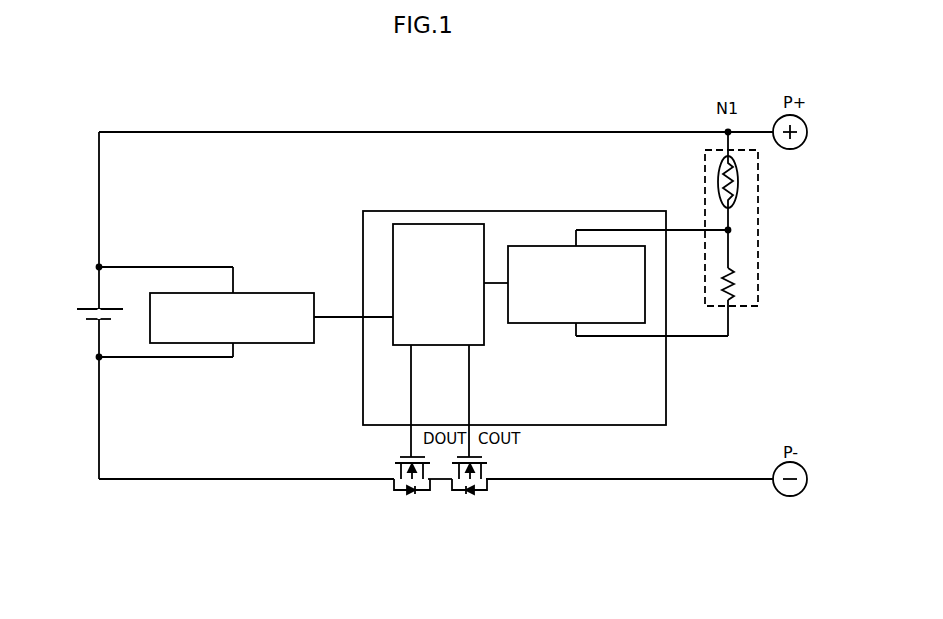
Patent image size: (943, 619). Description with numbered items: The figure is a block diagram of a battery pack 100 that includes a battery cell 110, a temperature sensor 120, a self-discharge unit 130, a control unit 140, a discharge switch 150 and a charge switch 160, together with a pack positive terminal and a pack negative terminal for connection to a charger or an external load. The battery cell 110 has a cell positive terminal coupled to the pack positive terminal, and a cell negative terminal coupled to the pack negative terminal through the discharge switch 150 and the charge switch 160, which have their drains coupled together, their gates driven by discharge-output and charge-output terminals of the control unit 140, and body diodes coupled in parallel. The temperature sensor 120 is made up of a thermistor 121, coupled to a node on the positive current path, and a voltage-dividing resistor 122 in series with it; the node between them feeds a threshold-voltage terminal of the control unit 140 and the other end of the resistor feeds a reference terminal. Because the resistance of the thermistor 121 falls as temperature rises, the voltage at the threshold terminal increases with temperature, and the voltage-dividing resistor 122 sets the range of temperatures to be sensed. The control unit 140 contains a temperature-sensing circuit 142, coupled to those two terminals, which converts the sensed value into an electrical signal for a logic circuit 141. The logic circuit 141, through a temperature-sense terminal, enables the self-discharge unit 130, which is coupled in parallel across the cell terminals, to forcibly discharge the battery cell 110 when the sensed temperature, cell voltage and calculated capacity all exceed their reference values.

The battery pack 100 is at (270, 98).
The battery cell 110 is at (76, 317).
The temperature sensor 120 is at (764, 234).
The thermistor 121 is at (738, 172).
The voltage-dividing resistor 122 is at (735, 291).
The self-discharge unit 130 is at (300, 292).
The control unit 140 is at (542, 296).
The logic circuit 141 is at (440, 224).
The temperature-sensing circuit 142 is at (533, 246).
The discharge switch 150 is at (398, 492).
The charge switch 160 is at (484, 492).